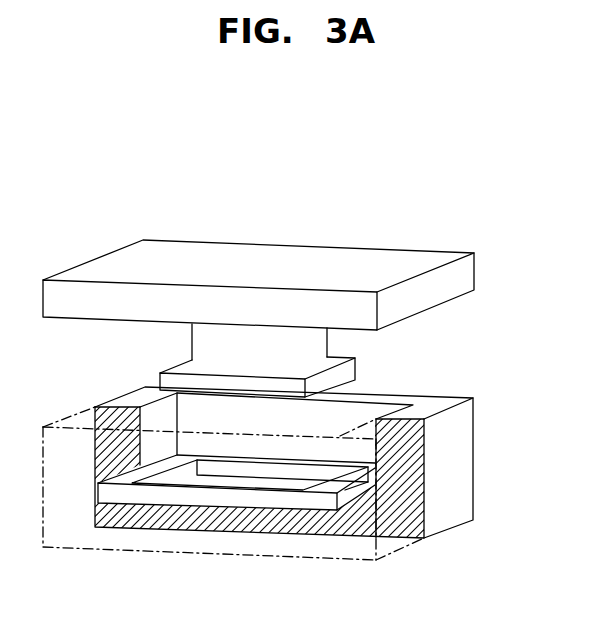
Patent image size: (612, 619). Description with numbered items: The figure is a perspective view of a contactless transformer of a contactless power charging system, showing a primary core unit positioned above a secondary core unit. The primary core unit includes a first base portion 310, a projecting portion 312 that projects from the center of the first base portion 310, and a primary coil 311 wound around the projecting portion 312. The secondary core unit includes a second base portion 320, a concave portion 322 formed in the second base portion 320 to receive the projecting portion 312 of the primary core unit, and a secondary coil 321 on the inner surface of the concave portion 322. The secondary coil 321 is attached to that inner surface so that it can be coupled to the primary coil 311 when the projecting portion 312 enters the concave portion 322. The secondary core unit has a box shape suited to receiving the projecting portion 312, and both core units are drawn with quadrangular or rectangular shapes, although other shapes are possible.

The first base portion 310 is at (443, 257).
The projecting portion 312 is at (317, 345).
The primary coil 311 is at (357, 369).
The second base portion 320 is at (413, 523).
The concave portion 322 is at (352, 405).
The secondary coil 321 is at (352, 497).